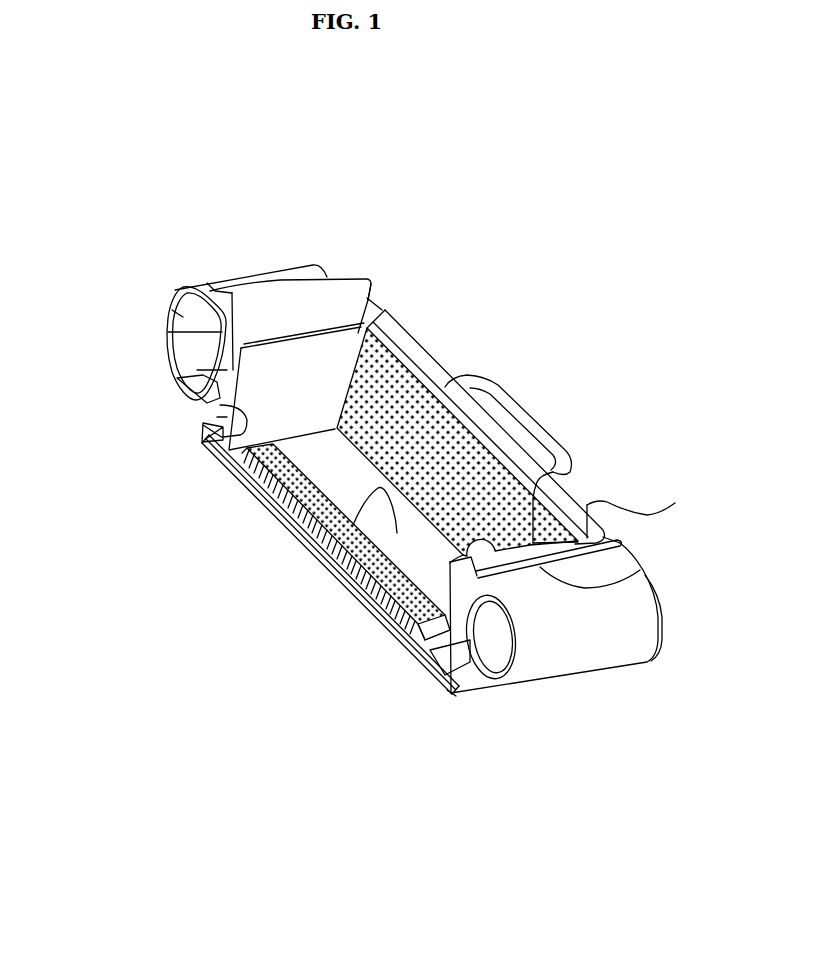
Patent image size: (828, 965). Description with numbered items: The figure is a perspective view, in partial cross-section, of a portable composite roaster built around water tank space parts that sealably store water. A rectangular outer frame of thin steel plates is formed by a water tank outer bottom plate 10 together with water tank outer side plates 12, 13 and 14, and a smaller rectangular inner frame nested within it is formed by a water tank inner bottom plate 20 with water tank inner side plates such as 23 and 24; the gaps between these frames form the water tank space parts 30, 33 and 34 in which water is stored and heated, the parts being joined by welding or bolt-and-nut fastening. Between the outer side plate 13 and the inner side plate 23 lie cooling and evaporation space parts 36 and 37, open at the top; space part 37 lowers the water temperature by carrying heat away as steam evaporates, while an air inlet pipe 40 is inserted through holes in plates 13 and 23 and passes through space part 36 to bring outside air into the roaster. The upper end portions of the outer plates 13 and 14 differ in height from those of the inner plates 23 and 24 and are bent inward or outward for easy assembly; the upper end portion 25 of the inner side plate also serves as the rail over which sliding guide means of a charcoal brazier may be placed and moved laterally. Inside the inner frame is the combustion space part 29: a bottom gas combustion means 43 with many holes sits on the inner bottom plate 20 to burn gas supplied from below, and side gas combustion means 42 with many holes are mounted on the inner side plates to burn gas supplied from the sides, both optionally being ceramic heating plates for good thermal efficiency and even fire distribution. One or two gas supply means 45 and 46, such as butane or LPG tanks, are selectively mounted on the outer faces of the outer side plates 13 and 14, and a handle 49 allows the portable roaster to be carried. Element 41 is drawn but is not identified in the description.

The water tank outer bottom plate 10 is at (247, 484).
The water tank outer side plate 12 is at (375, 303).
The water tank outer side plate 13 is at (167, 333).
The water tank outer side plate 14 is at (438, 678).
The water tank inner bottom plate 20 is at (302, 548).
The water tank inner side plate 23 is at (213, 385).
The water tank inner side plate 24 is at (400, 592).
The upper end portion of the water tank inner side plate 25 is at (308, 334).
The combustion space part 29 is at (330, 568).
The water tank space part 30 is at (277, 518).
The water tank space part 33 is at (197, 370).
The water tank space part 34 is at (437, 653).
The cooling and evaporation space part 36 is at (277, 333).
The cooling and evaporation space part 37 is at (643, 565).
The air inlet pipe 40 is at (202, 442).
The wedge 41 is at (207, 422).
The side gas combustion means 42 is at (408, 410).
The bottom gas combustion means 43 is at (370, 593).
The gas supply means 45 is at (203, 281).
The gas supply means 46 is at (170, 312).
The handle 49 is at (538, 413).